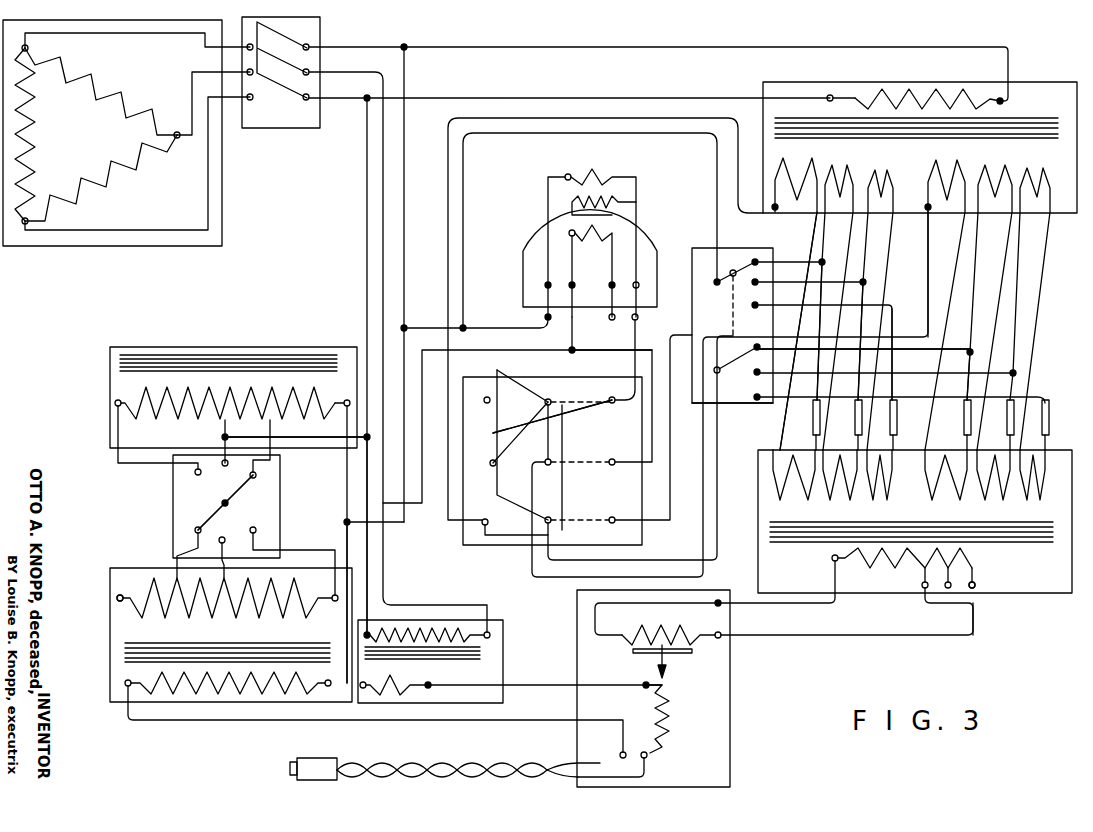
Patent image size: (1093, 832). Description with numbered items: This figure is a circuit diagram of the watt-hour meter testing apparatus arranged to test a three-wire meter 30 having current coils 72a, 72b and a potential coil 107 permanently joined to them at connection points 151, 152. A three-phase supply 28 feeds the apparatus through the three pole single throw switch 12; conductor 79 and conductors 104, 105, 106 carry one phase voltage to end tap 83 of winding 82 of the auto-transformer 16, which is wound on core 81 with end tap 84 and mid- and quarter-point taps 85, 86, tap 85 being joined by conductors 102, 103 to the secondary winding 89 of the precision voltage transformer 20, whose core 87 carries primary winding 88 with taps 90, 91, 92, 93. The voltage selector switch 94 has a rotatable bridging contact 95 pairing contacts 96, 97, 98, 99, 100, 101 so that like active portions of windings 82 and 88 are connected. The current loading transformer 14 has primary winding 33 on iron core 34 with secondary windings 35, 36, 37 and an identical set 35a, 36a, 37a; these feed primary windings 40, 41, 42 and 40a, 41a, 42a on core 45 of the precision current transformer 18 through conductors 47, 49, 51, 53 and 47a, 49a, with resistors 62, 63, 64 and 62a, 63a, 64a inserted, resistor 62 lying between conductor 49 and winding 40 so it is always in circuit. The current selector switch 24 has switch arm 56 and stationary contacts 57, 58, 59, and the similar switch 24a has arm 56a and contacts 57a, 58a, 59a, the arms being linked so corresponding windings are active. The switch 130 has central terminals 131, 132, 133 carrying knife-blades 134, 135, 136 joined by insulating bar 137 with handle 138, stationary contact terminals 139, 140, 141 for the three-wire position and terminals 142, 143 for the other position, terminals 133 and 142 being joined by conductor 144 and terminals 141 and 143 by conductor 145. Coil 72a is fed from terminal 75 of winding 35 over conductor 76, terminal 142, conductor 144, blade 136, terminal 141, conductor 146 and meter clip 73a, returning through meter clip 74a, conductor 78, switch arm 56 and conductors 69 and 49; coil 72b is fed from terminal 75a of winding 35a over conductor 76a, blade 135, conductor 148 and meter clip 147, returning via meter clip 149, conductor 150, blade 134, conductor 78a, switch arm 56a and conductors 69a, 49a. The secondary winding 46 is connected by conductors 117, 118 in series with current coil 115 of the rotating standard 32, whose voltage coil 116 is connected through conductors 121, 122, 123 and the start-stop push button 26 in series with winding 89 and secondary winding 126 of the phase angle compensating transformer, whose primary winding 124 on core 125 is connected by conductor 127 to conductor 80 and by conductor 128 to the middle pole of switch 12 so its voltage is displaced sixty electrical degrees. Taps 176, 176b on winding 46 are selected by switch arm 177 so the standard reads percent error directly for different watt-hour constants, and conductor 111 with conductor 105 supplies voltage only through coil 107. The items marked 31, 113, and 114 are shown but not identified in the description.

The main switch 12 is at (307, 130).
The heater unit 14 is at (828, 82).
The relay unit 16 is at (212, 345).
The contactor unit 18 is at (1048, 595).
The relay unit 20 is at (116, 572).
The control switch 24 is at (692, 268).
The control switch section 24a is at (733, 403).
The power plug 26 is at (318, 757).
The three-phase motor 28 is at (162, 246).
The thermostat 30 is at (648, 181).
The slider 31 is at (672, 668).
The control unit 32 is at (715, 676).
The heater element 33 is at (942, 94).
The core 34 is at (1050, 126).
The contact 35 is at (806, 173).
The contact 36 is at (845, 175).
The contact 37 is at (887, 176).
The contact 35a is at (942, 175).
The contact 36a is at (992, 177).
The contact 37a is at (1035, 177).
The contact 40 is at (793, 492).
The contact 41 is at (840, 492).
The contact 42 is at (880, 492).
The contact 40a is at (955, 490).
The contact 41a is at (1000, 492).
The contact 42a is at (1038, 493).
The core 45 is at (1005, 540).
The resistance coil 46 is at (855, 550).
The lead 47 is at (775, 429).
The lead 47a is at (940, 262).
The lead 49 is at (817, 388).
The lead 51 is at (858, 388).
The lead 53 is at (896, 384).
The lead 49a is at (968, 388).
The switch blade 56 is at (744, 268).
The switch blade 56a is at (706, 374).
The contact 57 is at (758, 270).
The contact 58 is at (763, 284).
The contact 59 is at (762, 305).
The contact 57a is at (848, 345).
The contact 58a is at (870, 378).
The contact 59a is at (886, 395).
The resistor 62 is at (813, 418).
The resistor 63 is at (856, 420).
The resistor 64 is at (893, 410).
The resistor 62a is at (964, 418).
The resistor 63a is at (1007, 430).
The resistor 64a is at (1042, 416).
The conductor 69 is at (782, 266).
The conductor 69a is at (944, 358).
The heater element 72a is at (605, 231).
The heater element 72b is at (608, 250).
The terminal 73a is at (639, 322).
The terminal 74a is at (545, 315).
The junction 75 is at (785, 212).
The junction 75a is at (930, 210).
The conductor 76 is at (445, 233).
The conductor 76a is at (537, 577).
The conductor 78 is at (462, 241).
The conductor 78a is at (555, 535).
The conductor 79 is at (615, 50).
The conductor 80 is at (540, 95).
The core 81 is at (120, 357).
The terminal 82 is at (225, 395).
The terminal 83 is at (341, 400).
The lead 84 is at (127, 430).
The lead 85 is at (225, 432).
The lead 86 is at (270, 455).
The core 87 is at (125, 643).
The terminal 88 is at (118, 596).
The coil 89 is at (268, 699).
The lead 90 is at (220, 544).
The lead 91 is at (196, 545).
The lead 92 is at (320, 553).
The terminal 93 is at (118, 602).
The switch 94 is at (178, 503).
The pivot 95 is at (222, 505).
The contact 96 is at (261, 483).
The contact 97 is at (198, 527).
The contact 98 is at (198, 476).
The contact 99 is at (258, 520).
The contact 100 is at (230, 470).
The switch blade 101 is at (238, 520).
The conductor 102 is at (330, 446).
The conductor 103 is at (365, 235).
The conductor 104 is at (336, 486).
The conductor 105 is at (406, 525).
The conductor 106 is at (404, 86).
The heater element 107 is at (616, 201).
The conductor 111 is at (330, 506).
The terminal 113 is at (125, 680).
The conductor 114 is at (328, 700).
The potentiometer 115 is at (648, 630).
The resistor 116 is at (670, 716).
The conductor 117 is at (795, 605).
The conductor 118 is at (840, 635).
The terminal 121 is at (612, 762).
The terminal 122 is at (652, 770).
The terminal 123 is at (340, 680).
The heater 124 is at (490, 596).
The core 125 is at (484, 655).
The coil 126 is at (418, 690).
The conductor 127 is at (367, 572).
The conductor 128 is at (372, 78).
The relay 130 is at (498, 540).
The contact 131 is at (556, 512).
The contact 132 is at (549, 444).
The contact 133 is at (533, 408).
The blade 134 is at (530, 512).
The blade 135 is at (552, 417).
The blade 136 is at (535, 392).
The blade 137 is at (508, 432).
The contact 138 is at (490, 424).
The contact 139 is at (620, 512).
The contact 140 is at (613, 459).
The contact 141 is at (618, 393).
The contact 142 is at (478, 525).
The contact 143 is at (480, 470).
The arm 144 is at (564, 492).
The arm 145 is at (515, 455).
The conductor 146 is at (637, 358).
The conductor 147 is at (568, 330).
The conductor 148 is at (650, 425).
The terminal 149 is at (610, 321).
The conductor 150 is at (675, 525).
The lead 151 is at (566, 176).
The lead 152 is at (569, 231).
The tap 176 is at (920, 586).
The tap 176b is at (977, 586).
The conductor 177 is at (925, 600).